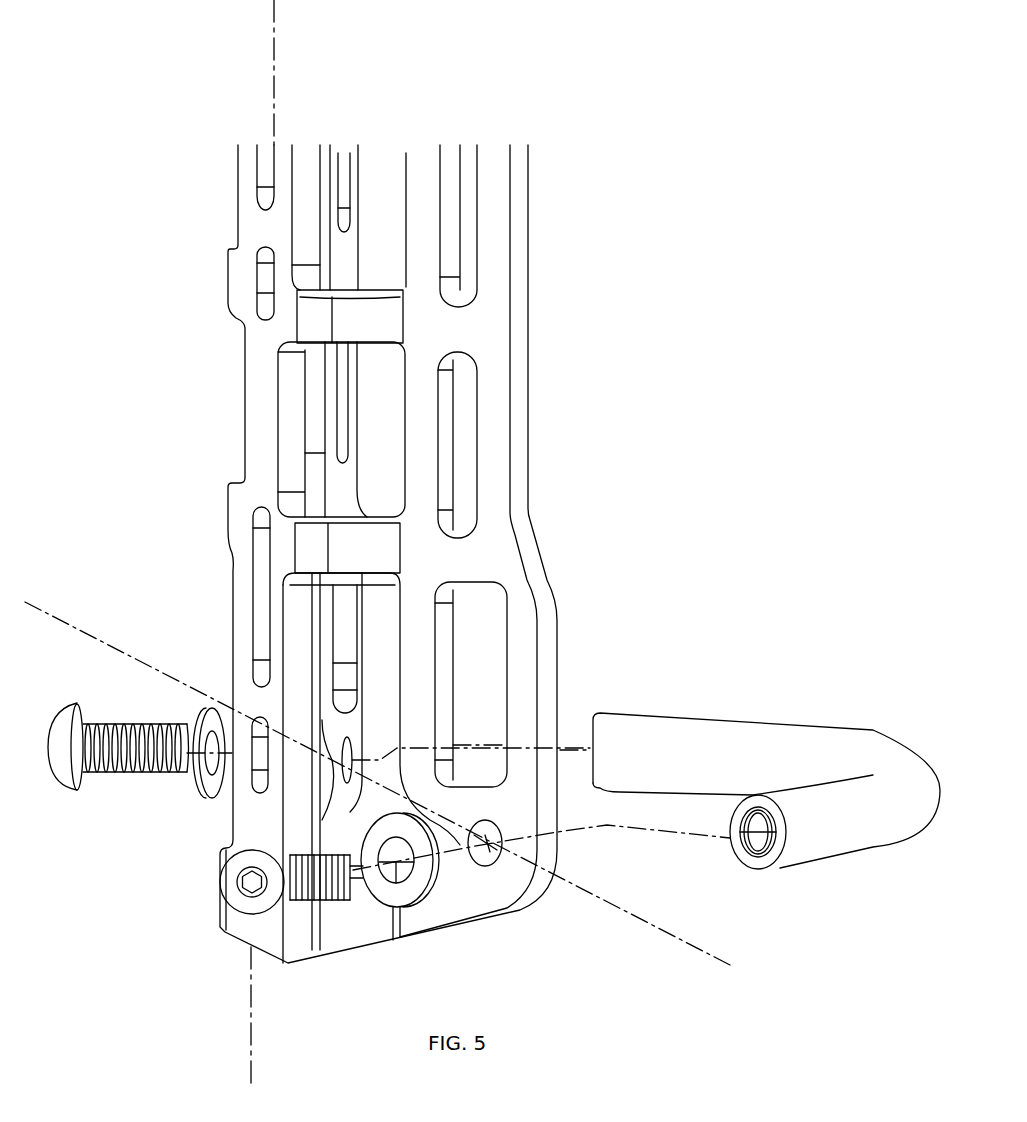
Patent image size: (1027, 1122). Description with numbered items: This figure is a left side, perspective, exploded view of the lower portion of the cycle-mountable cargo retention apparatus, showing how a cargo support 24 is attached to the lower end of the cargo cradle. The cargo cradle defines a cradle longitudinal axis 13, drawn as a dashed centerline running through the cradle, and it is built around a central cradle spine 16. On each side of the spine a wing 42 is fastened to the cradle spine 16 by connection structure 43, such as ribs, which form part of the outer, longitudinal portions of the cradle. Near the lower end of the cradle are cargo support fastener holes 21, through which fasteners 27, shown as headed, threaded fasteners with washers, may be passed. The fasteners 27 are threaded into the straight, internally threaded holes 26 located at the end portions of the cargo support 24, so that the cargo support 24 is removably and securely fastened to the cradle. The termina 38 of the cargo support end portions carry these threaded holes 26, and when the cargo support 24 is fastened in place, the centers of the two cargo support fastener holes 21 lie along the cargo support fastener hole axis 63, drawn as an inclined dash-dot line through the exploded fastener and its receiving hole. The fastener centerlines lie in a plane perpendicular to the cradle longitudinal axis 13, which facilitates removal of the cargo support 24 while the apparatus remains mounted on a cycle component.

The cradle longitudinal axis 13 is at (273, 43).
The cradle spine 16 is at (245, 395).
The cargo support fastener holes 21 is at (347, 743).
The cargo support 24 is at (767, 720).
The straight, internally threaded holes 26 is at (737, 853).
The fasteners 27 is at (123, 773).
The termina of the cargo support end portions 38 is at (592, 740).
The wing 42 is at (360, 160).
The connection structure 43 is at (373, 288).
The cargo support fastener hole axis 63 is at (680, 937).